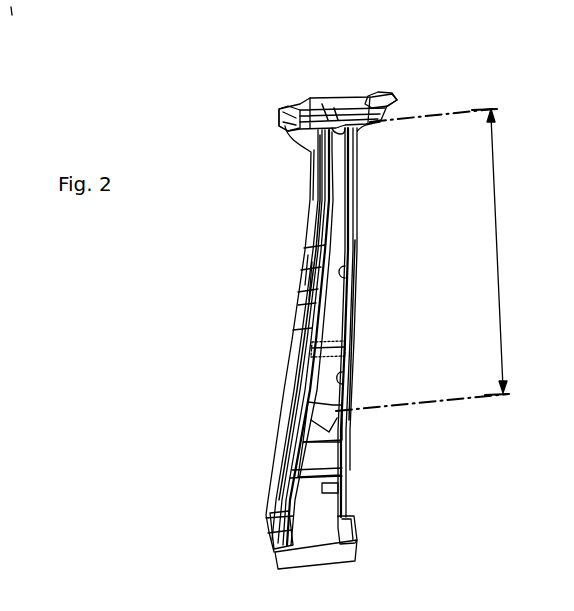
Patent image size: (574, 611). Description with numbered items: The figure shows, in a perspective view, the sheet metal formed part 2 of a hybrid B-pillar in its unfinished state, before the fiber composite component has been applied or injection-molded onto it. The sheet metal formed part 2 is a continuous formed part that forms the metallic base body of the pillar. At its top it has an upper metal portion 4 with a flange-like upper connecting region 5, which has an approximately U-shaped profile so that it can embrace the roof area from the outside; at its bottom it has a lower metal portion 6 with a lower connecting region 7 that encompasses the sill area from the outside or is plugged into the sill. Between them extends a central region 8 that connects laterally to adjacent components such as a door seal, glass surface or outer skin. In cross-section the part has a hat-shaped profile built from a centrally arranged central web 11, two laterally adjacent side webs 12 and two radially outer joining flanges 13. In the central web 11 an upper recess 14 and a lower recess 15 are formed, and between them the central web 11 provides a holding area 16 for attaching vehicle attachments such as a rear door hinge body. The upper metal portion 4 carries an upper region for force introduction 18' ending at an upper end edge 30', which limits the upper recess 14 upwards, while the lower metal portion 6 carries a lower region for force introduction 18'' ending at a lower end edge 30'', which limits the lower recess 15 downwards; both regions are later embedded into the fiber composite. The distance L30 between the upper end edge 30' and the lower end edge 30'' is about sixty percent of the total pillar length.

The sheet metal formed part 2 is at (364, 238).
The upper metal portion 4 is at (334, 96).
The upper connecting region 5 is at (283, 116).
The lower metal portion 6 is at (356, 529).
The lower connecting region 7 is at (279, 561).
The central region 8 is at (355, 335).
The central web 11 is at (317, 178).
The side webs 12 is at (316, 233).
The joining flanges 13 is at (290, 371).
The upper recess 14 is at (356, 270).
The lower recess 15 is at (342, 378).
The holding area 16 is at (327, 352).
The upper region for force introduction 18' is at (305, 77).
The lower region for force introduction 18'' is at (370, 454).
The upper end edge 30' is at (409, 81).
The lower end edge 30'' is at (265, 447).
The distance between the upper edge and the lower edge L30 is at (502, 312).